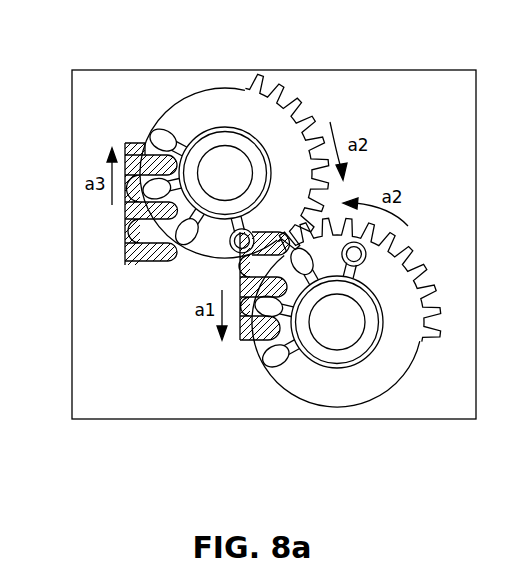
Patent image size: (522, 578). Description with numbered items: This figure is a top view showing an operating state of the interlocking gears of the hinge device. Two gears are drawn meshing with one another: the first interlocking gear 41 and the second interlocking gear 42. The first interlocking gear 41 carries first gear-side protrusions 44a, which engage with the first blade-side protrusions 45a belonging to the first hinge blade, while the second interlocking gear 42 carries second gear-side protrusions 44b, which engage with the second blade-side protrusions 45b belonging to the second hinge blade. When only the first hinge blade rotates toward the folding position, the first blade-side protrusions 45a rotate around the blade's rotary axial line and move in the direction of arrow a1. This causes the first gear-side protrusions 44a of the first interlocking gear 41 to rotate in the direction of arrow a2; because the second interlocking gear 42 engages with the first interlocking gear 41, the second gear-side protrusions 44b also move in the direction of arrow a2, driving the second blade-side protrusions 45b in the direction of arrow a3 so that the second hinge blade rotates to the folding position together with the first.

The first interlocking gear 41 is at (367, 378).
The second interlocking gear 42 is at (229, 99).
The first gear-side protrusions 44a is at (282, 360).
The second gear-side protrusions 44b is at (164, 132).
The first blade-side protrusions 45a is at (254, 341).
The second blade-side protrusions 45b is at (143, 142).